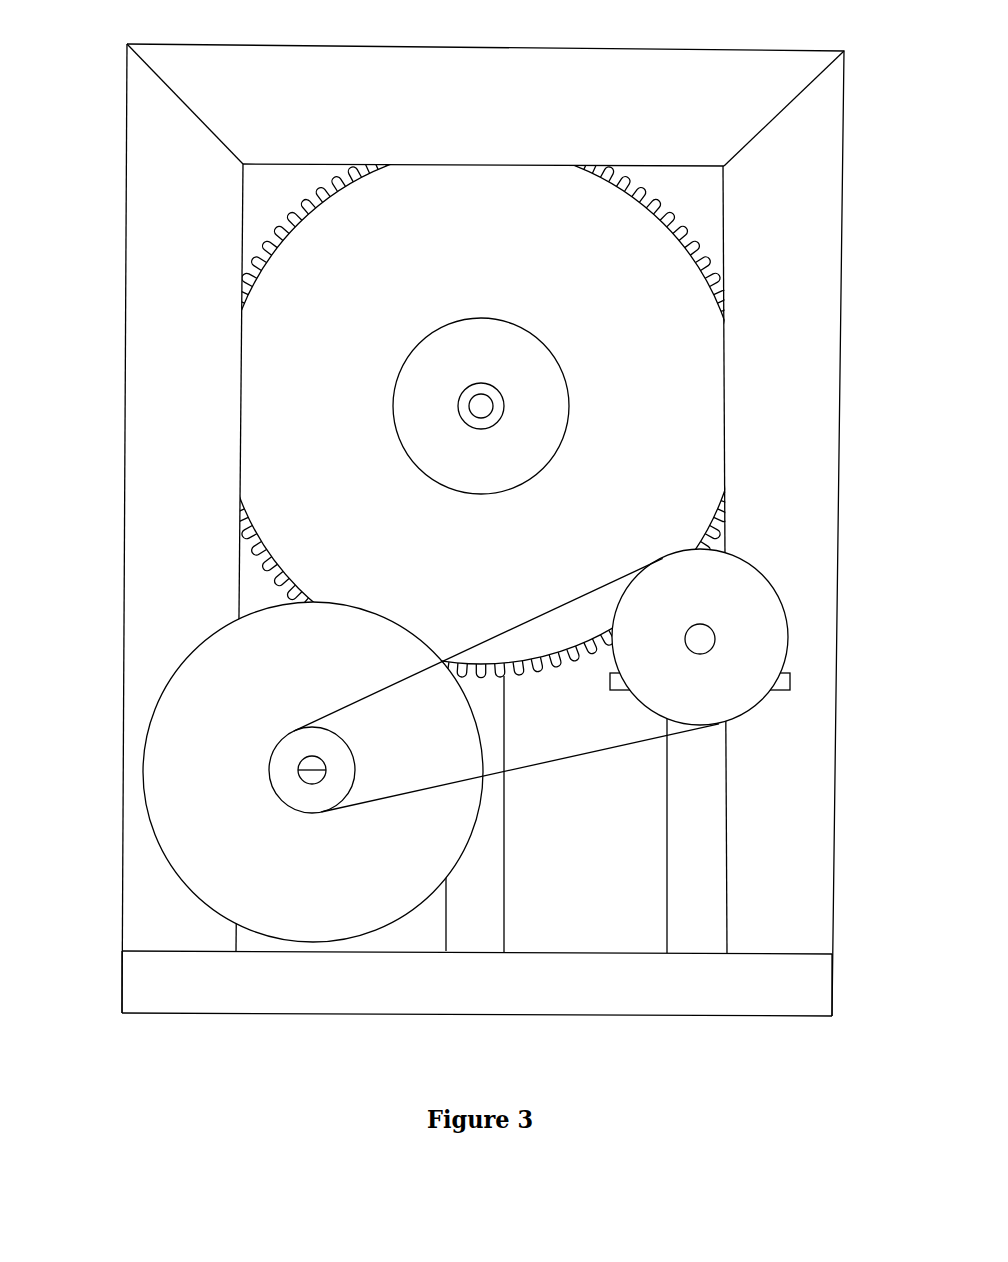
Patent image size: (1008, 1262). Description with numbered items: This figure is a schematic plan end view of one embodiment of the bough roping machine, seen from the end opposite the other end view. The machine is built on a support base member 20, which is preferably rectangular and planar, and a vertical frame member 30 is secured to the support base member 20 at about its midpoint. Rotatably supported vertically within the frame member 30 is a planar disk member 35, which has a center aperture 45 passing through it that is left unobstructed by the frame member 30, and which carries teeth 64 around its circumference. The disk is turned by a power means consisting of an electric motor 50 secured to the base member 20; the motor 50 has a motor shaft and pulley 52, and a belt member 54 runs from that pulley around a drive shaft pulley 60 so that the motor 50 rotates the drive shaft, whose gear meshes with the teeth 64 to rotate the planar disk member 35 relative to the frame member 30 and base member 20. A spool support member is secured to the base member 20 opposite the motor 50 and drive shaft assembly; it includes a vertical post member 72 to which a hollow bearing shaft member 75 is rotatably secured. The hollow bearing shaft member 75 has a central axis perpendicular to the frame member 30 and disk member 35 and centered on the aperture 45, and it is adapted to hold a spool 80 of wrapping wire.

The support base member 20 is at (447, 996).
The vertical frame member 30 is at (432, 68).
The planar disk member 35 is at (482, 411).
The center aperture 45 is at (567, 395).
The electric motor 50 is at (370, 923).
The motor shaft and pulley 52 is at (300, 747).
The belt member 54 is at (553, 760).
The drive shaft pulley 60 is at (748, 580).
The teeth 64 is at (647, 202).
The vertical post member 72 is at (490, 897).
The hollow bearing shaft member 75 is at (485, 385).
The spool 80 is at (545, 472).